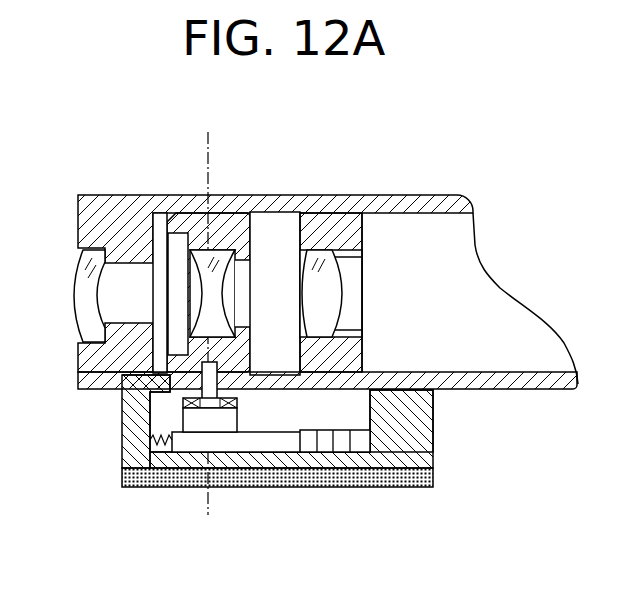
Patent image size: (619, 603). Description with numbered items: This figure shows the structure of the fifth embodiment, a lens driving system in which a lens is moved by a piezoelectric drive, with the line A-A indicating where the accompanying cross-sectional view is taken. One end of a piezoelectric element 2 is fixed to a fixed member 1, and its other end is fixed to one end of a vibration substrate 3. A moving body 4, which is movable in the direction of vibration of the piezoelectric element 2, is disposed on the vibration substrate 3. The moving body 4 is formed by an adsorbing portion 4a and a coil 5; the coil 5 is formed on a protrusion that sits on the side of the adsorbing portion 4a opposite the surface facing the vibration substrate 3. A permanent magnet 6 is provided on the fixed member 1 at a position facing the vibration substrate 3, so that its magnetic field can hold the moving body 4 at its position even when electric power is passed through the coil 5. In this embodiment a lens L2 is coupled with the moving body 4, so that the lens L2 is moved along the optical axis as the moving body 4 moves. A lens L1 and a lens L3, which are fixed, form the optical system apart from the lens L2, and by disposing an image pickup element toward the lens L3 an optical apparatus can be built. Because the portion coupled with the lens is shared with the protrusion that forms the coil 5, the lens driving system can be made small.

The fixed member 1 is at (433, 428).
The piezoelectric element 2 is at (331, 440).
The vibration substrate 3 is at (266, 438).
The moving body 4 is at (163, 403).
The adsorbing portion 4a is at (192, 425).
The coil 5 is at (182, 398).
The permanent magnet 6 is at (410, 487).
The line A- A is at (207, 326).
The lens L1 is at (75, 290).
The lens L2 is at (212, 290).
The lens L3 is at (330, 288).